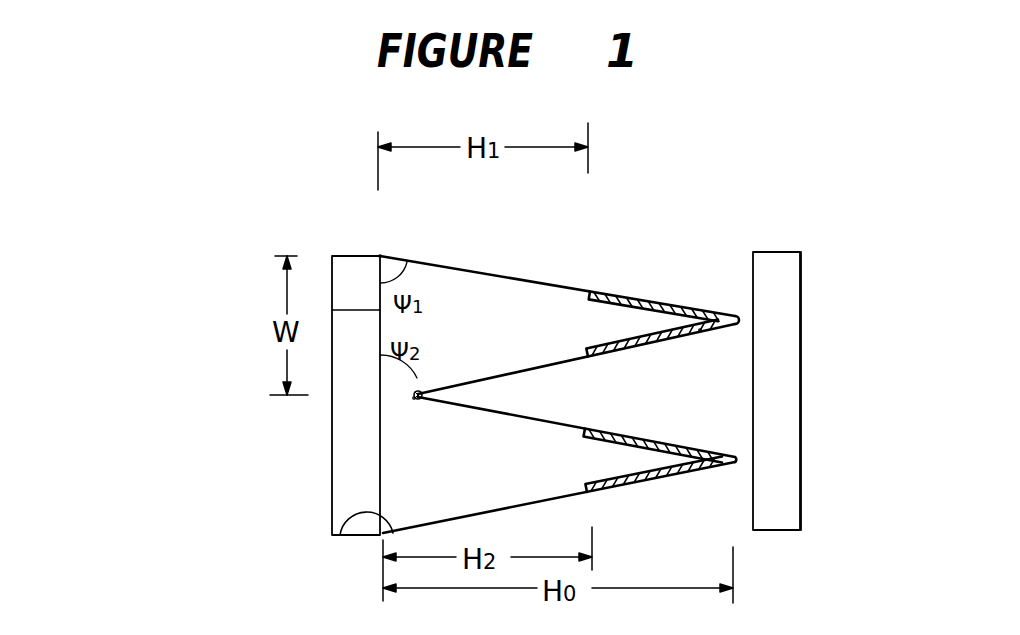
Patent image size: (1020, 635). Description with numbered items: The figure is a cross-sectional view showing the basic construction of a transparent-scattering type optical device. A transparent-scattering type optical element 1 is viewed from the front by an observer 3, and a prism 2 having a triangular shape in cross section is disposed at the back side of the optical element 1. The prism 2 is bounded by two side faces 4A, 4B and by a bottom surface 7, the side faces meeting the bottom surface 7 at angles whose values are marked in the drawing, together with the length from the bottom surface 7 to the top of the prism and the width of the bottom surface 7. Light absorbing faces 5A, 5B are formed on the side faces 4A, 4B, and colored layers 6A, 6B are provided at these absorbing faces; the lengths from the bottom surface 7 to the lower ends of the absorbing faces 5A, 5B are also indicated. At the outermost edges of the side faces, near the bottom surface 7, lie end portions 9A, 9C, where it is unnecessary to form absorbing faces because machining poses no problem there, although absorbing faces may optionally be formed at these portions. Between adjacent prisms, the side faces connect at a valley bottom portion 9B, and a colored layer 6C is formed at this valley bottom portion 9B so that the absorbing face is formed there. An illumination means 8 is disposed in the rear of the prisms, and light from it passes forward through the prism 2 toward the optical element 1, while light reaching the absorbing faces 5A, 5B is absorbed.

The transparent-scattering type optical element 1 is at (345, 539).
The prism 2 is at (538, 276).
The observer 3 is at (138, 435).
The side face of the prism 4A is at (447, 268).
The side face of the prism 4B is at (572, 351).
The light absorbing face 5A is at (625, 290).
The light absorbing face 5B is at (642, 346).
The colored layer 6A is at (719, 312).
The colored layer 6B is at (698, 336).
The colored layer 6C is at (423, 396).
The bottom surface of the prism 7 is at (332, 310).
The illumination means 8 is at (783, 530).
The end portion of the side face 9A is at (379, 254).
The valley bottom portion 9B is at (414, 398).
The end portion of the side face 9C is at (332, 527).